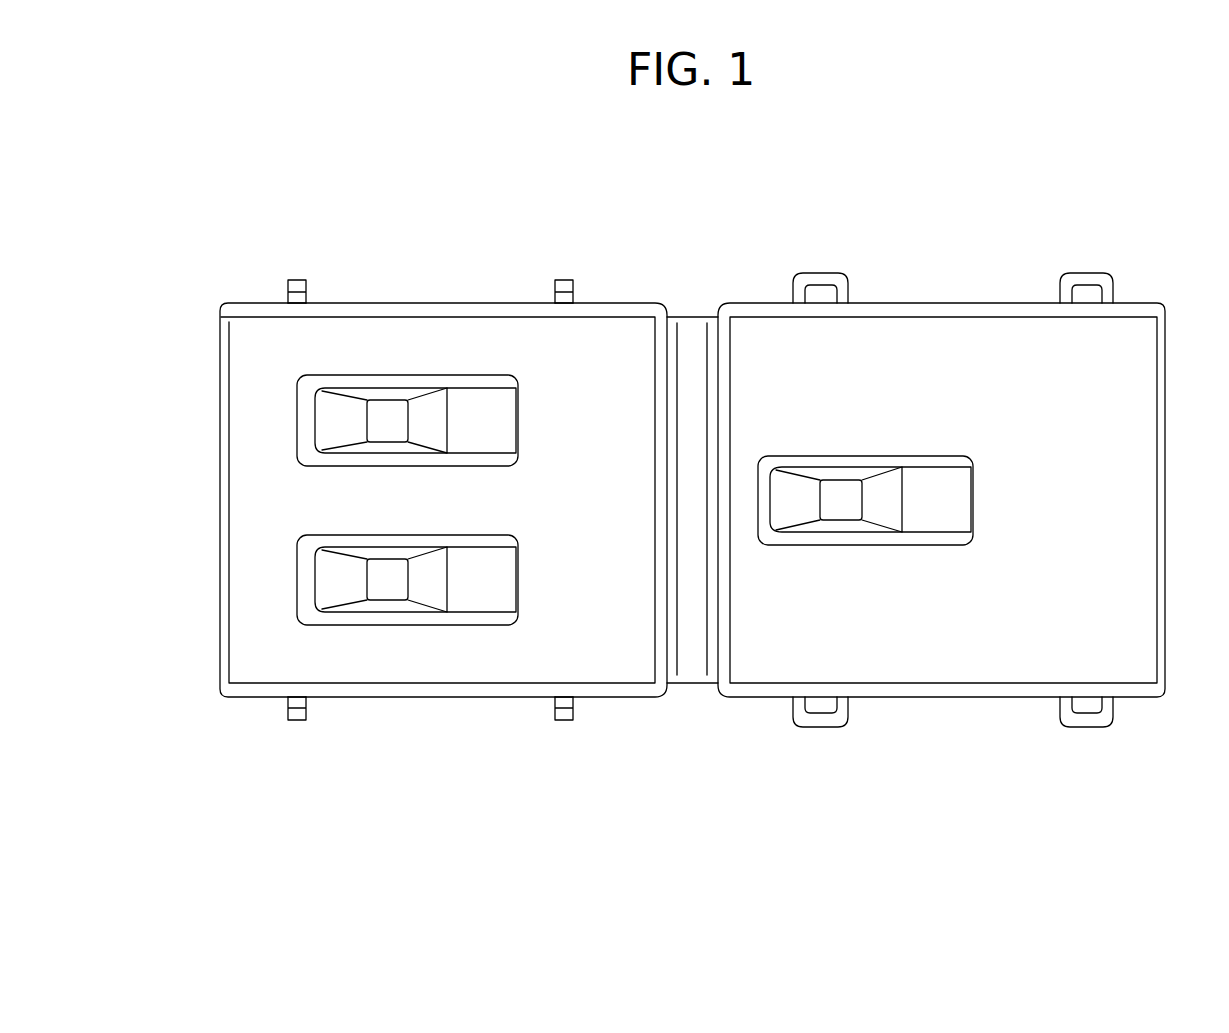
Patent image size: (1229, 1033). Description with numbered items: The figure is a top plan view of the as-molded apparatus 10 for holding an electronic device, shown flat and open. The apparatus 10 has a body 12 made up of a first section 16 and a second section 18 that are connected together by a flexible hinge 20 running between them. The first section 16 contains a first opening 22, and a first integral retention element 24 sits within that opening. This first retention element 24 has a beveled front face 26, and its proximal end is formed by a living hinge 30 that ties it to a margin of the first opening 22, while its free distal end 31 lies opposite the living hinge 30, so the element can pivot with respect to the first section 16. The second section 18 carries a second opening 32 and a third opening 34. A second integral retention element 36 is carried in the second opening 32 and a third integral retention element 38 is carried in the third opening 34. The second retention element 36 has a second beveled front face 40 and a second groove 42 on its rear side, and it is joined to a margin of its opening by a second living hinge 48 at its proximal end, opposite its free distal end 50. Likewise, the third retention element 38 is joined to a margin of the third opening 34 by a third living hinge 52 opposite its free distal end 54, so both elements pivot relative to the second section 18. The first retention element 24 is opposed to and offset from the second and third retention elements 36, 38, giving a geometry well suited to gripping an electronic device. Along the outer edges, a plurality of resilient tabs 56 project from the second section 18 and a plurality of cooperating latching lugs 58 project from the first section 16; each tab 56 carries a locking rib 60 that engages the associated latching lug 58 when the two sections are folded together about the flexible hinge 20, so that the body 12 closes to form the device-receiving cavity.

The apparatus 10 is at (963, 207).
The body 12 is at (233, 690).
The first section 16 is at (955, 625).
The second section 18 is at (445, 660).
The flexible hinge 20 is at (693, 668).
The first opening 22 is at (905, 470).
The first integral retention element 24 is at (838, 488).
The beveled front face 26 is at (878, 505).
The living hinge 30 is at (975, 490).
The free distal end 31 is at (770, 492).
The second opening 32 is at (357, 386).
The third opening 34 is at (305, 610).
The second integral retention element 36 is at (389, 400).
The third integral retention element 38 is at (383, 557).
The second beveled front face 40 is at (327, 414).
The second groove 42 is at (333, 578).
The second living hinge 48 is at (523, 417).
The free distal end 50 is at (313, 426).
The third living hinge 52 is at (520, 578).
The free distal end 54 is at (313, 592).
The resilient tabs 56 is at (291, 298).
The latching lugs 58 is at (817, 287).
The locking rib 60 is at (296, 290).